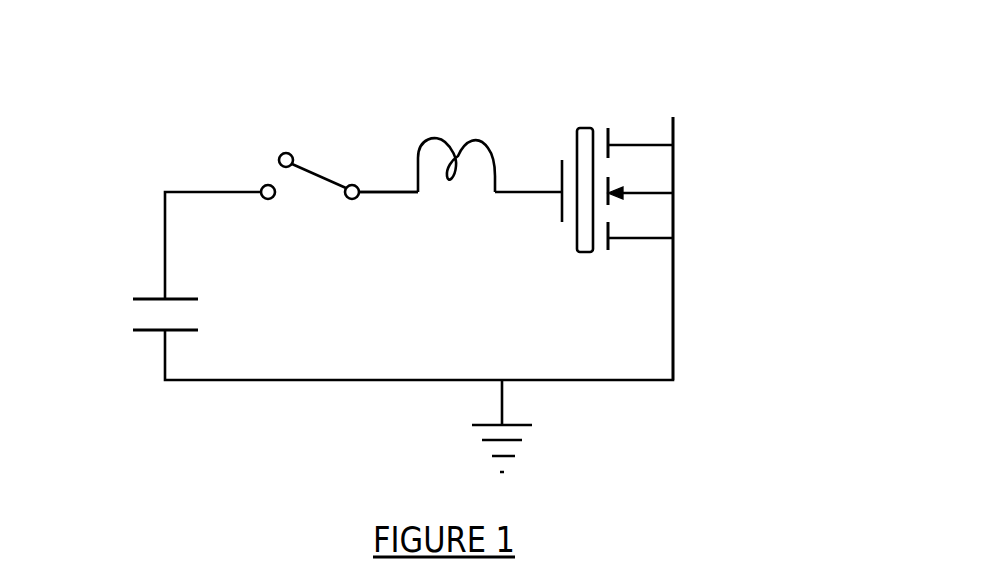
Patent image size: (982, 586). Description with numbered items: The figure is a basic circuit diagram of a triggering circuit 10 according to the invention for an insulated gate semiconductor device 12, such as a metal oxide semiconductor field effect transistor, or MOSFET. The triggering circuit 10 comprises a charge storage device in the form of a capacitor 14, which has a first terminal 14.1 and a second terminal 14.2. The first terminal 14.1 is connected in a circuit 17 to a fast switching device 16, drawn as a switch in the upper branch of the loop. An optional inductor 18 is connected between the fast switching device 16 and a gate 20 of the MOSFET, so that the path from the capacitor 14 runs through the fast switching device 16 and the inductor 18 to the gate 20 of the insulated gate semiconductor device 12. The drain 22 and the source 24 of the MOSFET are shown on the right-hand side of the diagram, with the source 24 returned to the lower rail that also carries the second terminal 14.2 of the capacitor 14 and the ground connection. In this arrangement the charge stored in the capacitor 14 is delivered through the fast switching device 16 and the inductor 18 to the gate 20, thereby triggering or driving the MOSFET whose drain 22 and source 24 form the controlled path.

The triggering circuit 10 is at (213, 92).
The insulated gate semiconductor device 12 is at (632, 240).
The capacitor 14 is at (165, 313).
The first terminal 14.1 is at (162, 298).
The second terminal 14.2 is at (162, 331).
The fast switching device 16 is at (326, 168).
The circuit 17 is at (381, 192).
The inductor 18 is at (480, 140).
The gate 20 is at (555, 198).
The drain 22 is at (645, 145).
The source 24 is at (647, 238).